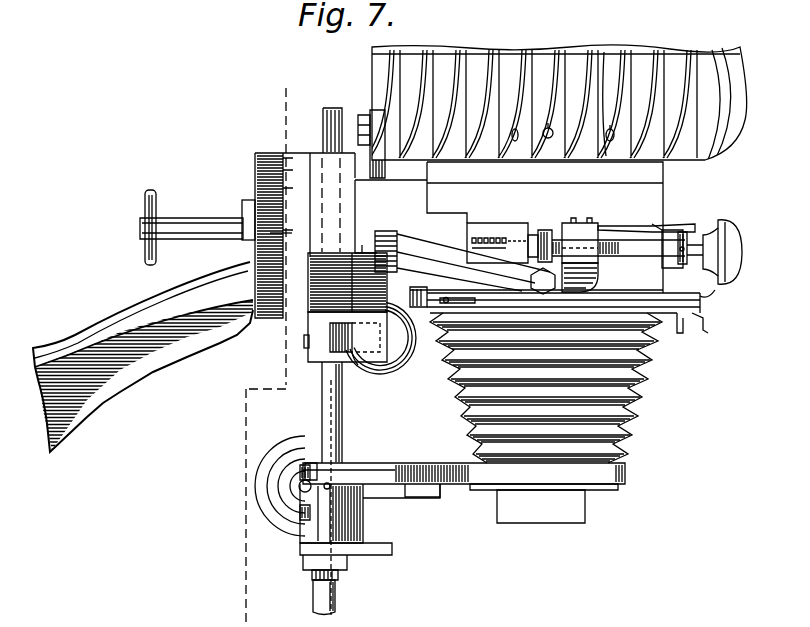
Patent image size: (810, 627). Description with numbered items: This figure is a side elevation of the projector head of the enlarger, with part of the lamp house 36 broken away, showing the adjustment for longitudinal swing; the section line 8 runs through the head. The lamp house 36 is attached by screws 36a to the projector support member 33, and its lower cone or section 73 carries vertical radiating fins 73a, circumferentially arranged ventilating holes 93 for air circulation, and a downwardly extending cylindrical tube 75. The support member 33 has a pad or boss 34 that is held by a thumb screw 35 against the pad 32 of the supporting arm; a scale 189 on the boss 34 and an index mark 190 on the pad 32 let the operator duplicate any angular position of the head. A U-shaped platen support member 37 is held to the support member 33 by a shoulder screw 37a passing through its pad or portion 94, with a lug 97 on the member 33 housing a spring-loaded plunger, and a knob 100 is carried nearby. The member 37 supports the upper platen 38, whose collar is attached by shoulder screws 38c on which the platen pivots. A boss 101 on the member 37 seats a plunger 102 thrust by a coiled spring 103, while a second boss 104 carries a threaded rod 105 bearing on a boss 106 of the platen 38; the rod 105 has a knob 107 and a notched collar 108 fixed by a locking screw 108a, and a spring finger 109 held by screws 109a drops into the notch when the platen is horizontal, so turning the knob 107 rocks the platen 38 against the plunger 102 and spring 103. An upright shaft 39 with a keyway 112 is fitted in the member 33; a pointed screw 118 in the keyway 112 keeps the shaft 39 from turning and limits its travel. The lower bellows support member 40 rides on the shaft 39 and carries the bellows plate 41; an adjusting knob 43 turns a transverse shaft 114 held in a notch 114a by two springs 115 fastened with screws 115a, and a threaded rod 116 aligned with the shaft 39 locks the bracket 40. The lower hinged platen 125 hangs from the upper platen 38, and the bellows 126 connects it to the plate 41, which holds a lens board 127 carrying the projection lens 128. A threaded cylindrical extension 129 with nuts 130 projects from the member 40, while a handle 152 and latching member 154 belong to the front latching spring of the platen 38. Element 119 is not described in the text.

The section line 8 is at (281, 86).
The pad 32 is at (258, 168).
The projector support member 33 is at (325, 167).
The pad or boss 34 is at (321, 307).
The thumb screw 35 is at (197, 223).
The lamp house 36 is at (569, 95).
The screws 36a is at (365, 118).
The platen support member 37 is at (399, 250).
The shoulder screw 37a is at (405, 282).
The upper platen 38 is at (422, 217).
The shoulder screws 38c is at (492, 262).
The upright shaft 39 is at (343, 413).
The lower bellows support member 40 is at (347, 519).
The bellows plate 41 is at (626, 478).
The adjusting knob 43 is at (257, 493).
The lower cone or section 73 is at (511, 62).
The vertical radiating fins 73a is at (620, 72).
The downwardly extending cylindrical tube 75 is at (660, 202).
The ventilating holes 93 is at (548, 126).
The pad or portion 94 is at (368, 277).
The boss or lug 97 is at (358, 360).
The knob 100 is at (398, 365).
The boss 101 is at (497, 228).
The plunger 102 is at (538, 232).
The coiled spring 103 is at (474, 233).
The second boss 104 is at (587, 259).
The threaded rod 105 is at (631, 243).
The boss 106 is at (576, 216).
The knob 107 is at (736, 248).
The notched collar 108 is at (668, 258).
The locking screw 108a is at (684, 236).
The spring finger 109 is at (679, 229).
The screws 109a is at (617, 215).
The keyway 112 is at (322, 394).
The transversely extending shaft 114 is at (300, 491).
The notch 114a is at (318, 481).
The springs 115 is at (297, 476).
The screws 115a is at (300, 470).
The threaded rod 116 is at (330, 488).
The pointed screw 118 is at (312, 346).
The handle grip 119 is at (281, 312).
The lower hinged platen 125 is at (682, 323).
The bellows 126 is at (638, 381).
The lens board 127 is at (592, 491).
The projection lens 128 is at (504, 511).
The threaded cylindrical extension 129 is at (338, 577).
The nuts 130 is at (343, 563).
The handle 152 is at (715, 290).
The latching member 154 is at (705, 324).
The scale 189 is at (291, 174).
The index mark 190 is at (270, 233).